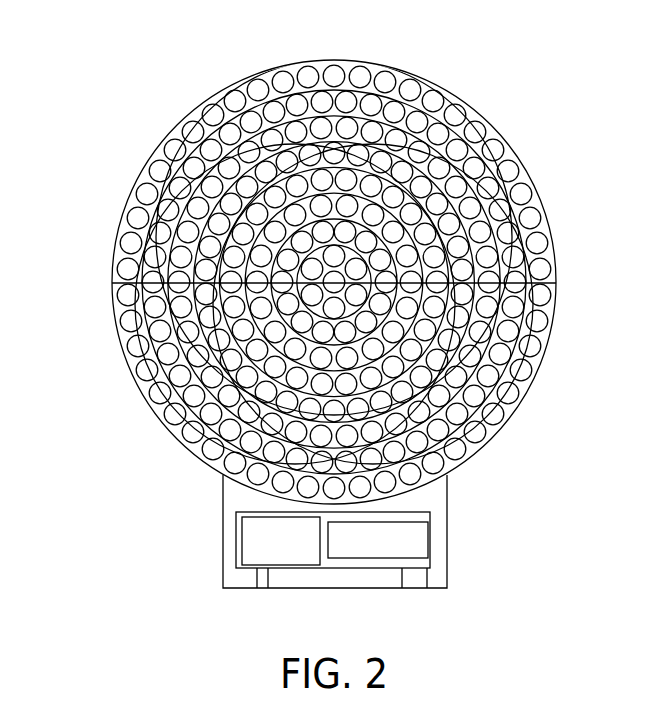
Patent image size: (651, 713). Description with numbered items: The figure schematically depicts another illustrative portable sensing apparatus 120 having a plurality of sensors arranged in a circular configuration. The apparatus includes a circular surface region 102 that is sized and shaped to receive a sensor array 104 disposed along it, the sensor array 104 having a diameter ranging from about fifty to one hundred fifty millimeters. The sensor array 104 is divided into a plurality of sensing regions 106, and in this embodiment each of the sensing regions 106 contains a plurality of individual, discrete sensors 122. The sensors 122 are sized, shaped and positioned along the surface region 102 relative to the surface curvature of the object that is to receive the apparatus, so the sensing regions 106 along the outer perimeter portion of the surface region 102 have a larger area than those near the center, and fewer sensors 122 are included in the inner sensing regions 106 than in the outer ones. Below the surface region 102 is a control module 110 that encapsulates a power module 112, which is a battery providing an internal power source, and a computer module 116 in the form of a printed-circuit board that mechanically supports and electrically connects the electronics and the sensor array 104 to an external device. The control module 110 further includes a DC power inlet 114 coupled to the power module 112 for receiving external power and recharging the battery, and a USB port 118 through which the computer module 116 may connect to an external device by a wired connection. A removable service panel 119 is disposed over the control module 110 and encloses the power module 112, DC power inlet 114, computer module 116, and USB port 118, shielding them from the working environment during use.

The portable sensing apparatus 120 is at (140, 101).
The surface region 102 is at (116, 346).
The sensor array 104 is at (157, 425).
The sensing regions 106 is at (213, 105).
The sensors 122 is at (506, 222).
The control module 110 is at (447, 498).
The power module 112 is at (247, 539).
The DC power inlet 114 is at (272, 578).
The computer module 116 is at (420, 539).
The USB port 118 is at (400, 578).
The removable service panel 119 is at (434, 556).